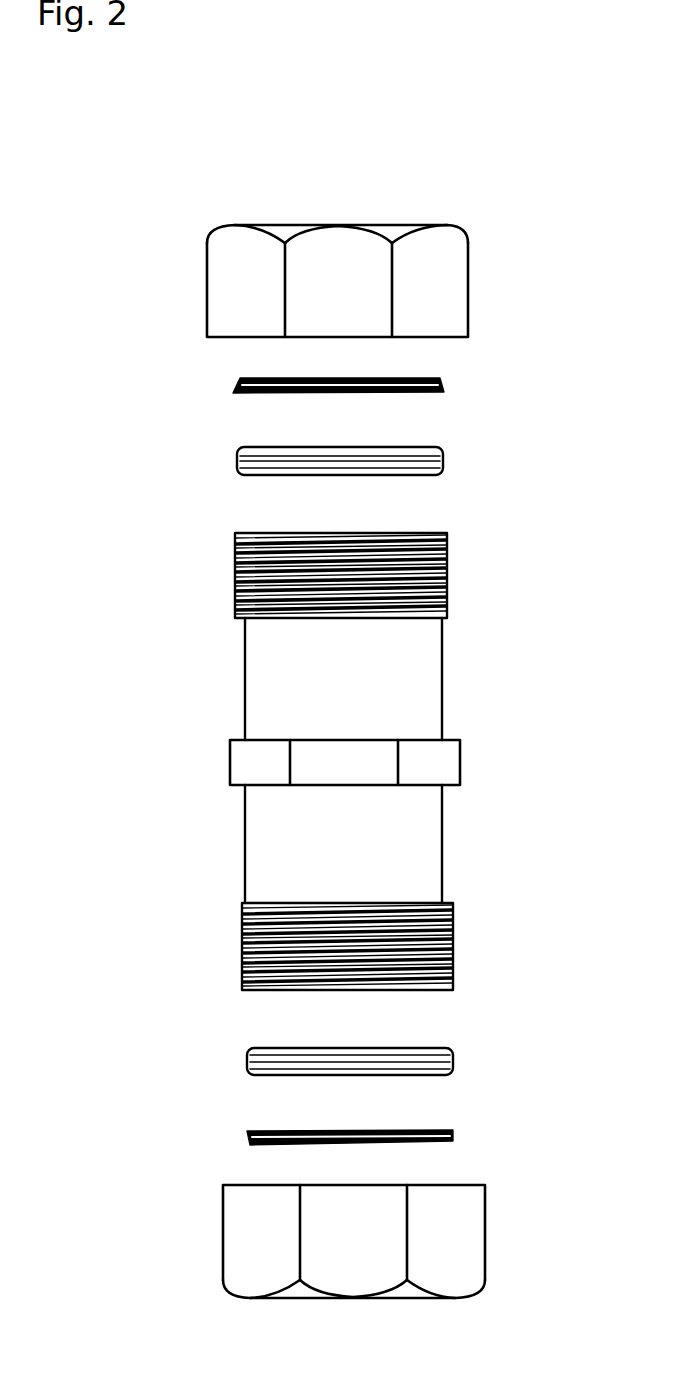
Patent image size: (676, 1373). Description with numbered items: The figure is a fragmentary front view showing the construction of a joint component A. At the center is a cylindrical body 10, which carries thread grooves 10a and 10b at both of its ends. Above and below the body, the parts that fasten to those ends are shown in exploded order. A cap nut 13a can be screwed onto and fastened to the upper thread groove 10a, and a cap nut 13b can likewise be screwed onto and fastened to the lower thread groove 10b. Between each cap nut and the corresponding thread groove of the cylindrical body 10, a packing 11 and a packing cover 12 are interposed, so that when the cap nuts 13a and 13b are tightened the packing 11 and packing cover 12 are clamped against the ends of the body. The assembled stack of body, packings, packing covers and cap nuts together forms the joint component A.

The cylindrical body 10 is at (397, 761).
The thread groove 10a is at (447, 573).
The thread groove 10b is at (453, 945).
The packing 11 is at (443, 463).
The packing cover 12 is at (444, 385).
The cap nut 13a is at (464, 288).
The cap nut 13b is at (475, 1237).
The joint component A is at (430, 761).